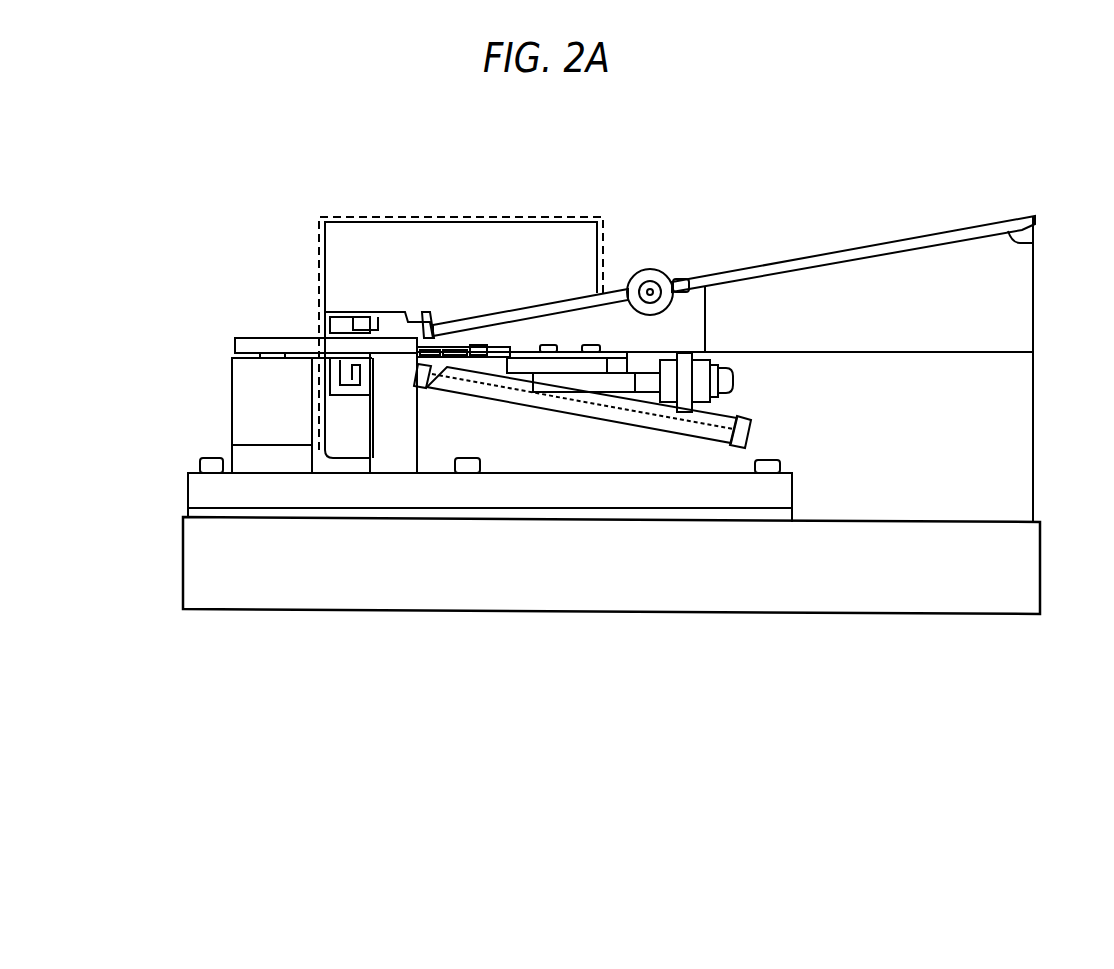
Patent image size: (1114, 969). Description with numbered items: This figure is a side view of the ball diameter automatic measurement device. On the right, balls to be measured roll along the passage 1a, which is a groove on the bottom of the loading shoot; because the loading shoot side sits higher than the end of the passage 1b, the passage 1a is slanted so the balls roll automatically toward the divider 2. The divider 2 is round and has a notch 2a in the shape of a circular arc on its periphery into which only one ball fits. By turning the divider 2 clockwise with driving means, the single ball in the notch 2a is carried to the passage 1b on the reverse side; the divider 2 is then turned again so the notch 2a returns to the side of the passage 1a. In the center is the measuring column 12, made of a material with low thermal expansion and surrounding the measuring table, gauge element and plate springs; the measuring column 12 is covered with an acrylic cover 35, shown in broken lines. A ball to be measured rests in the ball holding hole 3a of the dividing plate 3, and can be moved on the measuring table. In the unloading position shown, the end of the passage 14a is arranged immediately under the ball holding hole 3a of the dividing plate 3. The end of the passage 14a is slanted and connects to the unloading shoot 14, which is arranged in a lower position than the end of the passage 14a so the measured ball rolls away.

The passage 1a is at (1037, 243).
The passage 1b is at (604, 285).
The divider 2 is at (653, 269).
The notch 2a is at (678, 280).
The dividing plate 3 is at (550, 312).
The ball holding hole 3a is at (427, 338).
The measuring column 12 is at (475, 240).
The unloading shoot 14 is at (722, 440).
The end of the passage 14a is at (447, 370).
The acrylic cover 35 is at (441, 217).